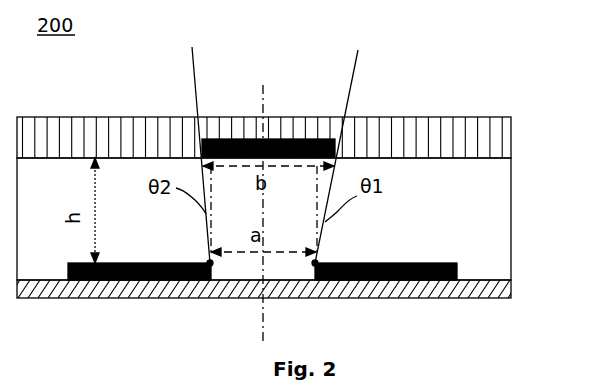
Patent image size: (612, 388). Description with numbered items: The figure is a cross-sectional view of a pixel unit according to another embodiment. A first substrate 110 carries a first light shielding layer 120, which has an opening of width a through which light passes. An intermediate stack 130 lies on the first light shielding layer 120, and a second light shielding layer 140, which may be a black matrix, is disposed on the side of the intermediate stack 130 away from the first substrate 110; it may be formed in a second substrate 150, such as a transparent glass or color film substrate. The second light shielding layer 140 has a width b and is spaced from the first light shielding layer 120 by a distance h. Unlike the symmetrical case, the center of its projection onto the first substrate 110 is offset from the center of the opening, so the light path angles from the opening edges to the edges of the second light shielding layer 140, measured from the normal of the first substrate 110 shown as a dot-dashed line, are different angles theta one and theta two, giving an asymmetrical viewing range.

The first substrate 110 is at (511, 285).
The first light shielding layer 120 is at (113, 263).
The intermediate stack 130 is at (504, 198).
The second light shielding layer 140 is at (207, 140).
The second substrate 150 is at (505, 116).